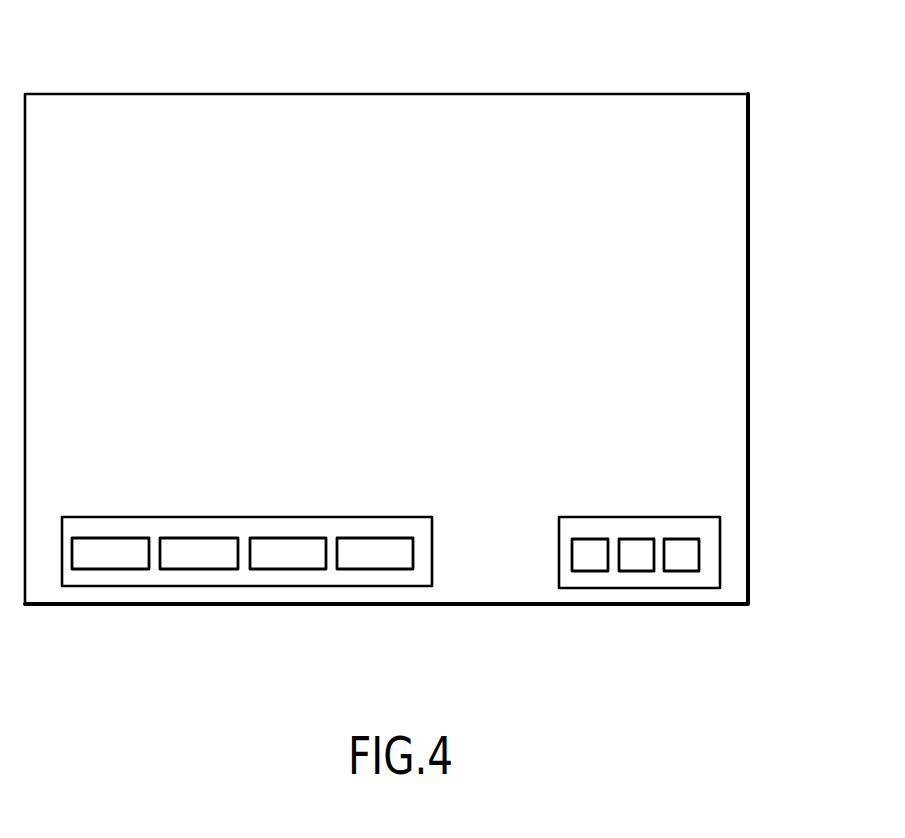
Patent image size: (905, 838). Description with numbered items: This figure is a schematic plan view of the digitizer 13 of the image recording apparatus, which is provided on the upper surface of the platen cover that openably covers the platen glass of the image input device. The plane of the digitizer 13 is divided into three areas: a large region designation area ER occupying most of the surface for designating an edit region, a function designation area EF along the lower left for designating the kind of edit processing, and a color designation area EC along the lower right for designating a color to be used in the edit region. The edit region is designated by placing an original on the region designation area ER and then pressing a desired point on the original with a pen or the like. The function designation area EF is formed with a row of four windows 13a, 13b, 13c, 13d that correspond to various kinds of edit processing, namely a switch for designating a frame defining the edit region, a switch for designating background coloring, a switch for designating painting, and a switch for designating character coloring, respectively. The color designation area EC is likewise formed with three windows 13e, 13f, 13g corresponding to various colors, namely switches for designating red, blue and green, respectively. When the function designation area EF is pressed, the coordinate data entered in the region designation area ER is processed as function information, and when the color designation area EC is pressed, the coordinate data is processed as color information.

The digitizer 13 is at (690, 94).
The region designation area ER is at (598, 118).
The function designation area EF is at (312, 517).
The color designation area EC is at (626, 517).
The window 13a is at (105, 570).
The window 13b is at (192, 570).
The window 13c is at (295, 570).
The window 13d is at (383, 570).
The window 13e is at (588, 571).
The window 13f is at (640, 571).
The window 13g is at (697, 571).